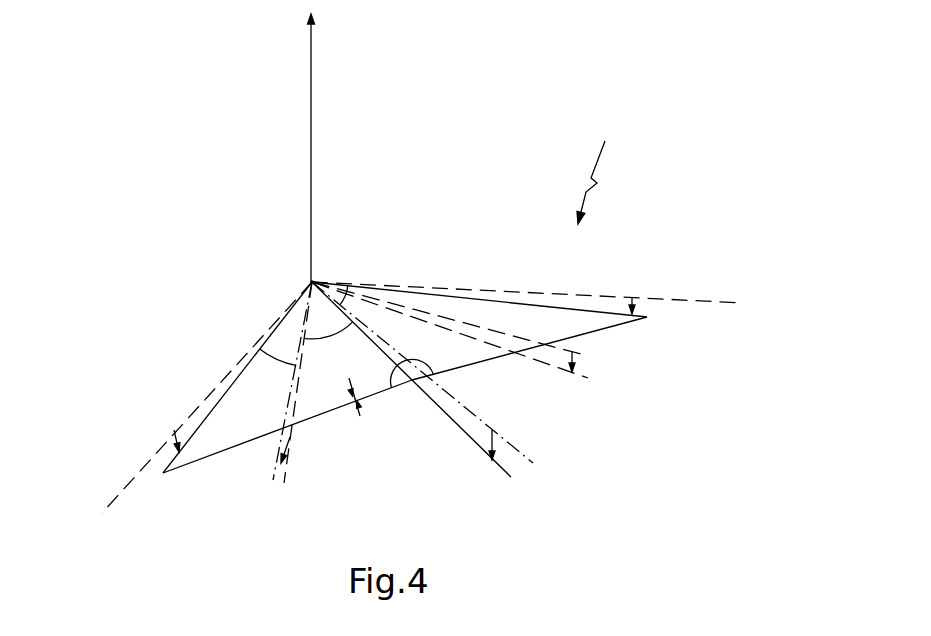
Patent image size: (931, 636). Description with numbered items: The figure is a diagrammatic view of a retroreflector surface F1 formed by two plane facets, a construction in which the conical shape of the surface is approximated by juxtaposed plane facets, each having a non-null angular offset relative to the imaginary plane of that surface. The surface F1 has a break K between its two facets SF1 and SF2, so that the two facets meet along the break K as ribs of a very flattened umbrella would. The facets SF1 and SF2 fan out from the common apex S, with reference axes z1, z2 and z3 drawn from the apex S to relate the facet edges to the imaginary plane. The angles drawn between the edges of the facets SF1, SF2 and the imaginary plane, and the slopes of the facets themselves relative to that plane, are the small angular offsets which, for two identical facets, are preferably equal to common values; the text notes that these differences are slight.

The z1 axis (vertical reference axis) z1 is at (330, 143).
The z2 axis z2 is at (198, 415).
The z3 axis z3 is at (548, 302).
The apex point S (common vertex) S is at (321, 265).
The facet SF1 is at (232, 448).
The facet SF2 is at (608, 327).
The break K is at (419, 399).
The surface F1 is at (607, 167).